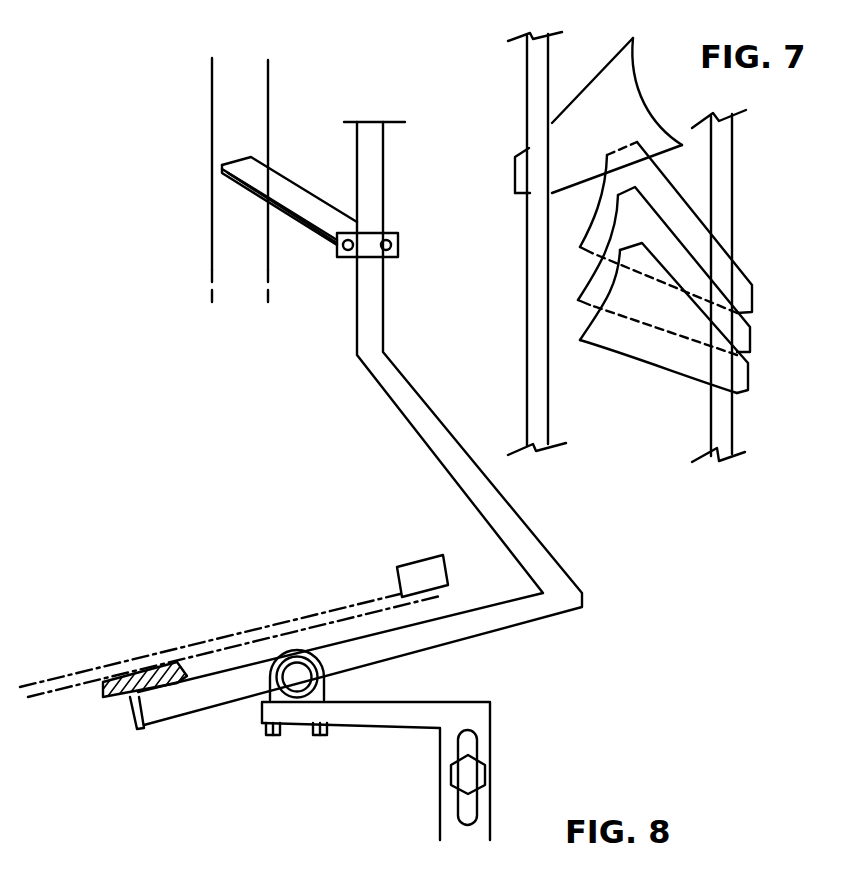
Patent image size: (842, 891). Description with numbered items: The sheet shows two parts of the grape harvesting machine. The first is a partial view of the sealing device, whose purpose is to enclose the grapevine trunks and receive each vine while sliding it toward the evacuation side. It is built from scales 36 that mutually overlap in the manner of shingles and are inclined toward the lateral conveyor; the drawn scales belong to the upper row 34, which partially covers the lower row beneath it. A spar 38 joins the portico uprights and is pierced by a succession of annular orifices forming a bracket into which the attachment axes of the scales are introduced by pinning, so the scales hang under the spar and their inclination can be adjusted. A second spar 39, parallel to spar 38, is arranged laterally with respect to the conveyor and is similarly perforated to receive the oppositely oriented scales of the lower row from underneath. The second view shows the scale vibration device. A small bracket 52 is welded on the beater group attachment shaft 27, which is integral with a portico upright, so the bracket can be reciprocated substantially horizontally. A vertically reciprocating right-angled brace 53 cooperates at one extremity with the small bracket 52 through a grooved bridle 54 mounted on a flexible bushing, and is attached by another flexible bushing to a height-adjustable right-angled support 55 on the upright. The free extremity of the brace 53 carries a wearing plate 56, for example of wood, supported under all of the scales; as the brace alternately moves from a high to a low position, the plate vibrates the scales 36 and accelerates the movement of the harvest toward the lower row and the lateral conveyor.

In FIG. 8, the beater group attachment shaft 27 is at (226, 110).
In FIG. 8, the upper row of scales 34 is at (109, 675).
In FIG. 7, the scale 36 is at (628, 126).
In FIG. 7, the spar 38 is at (733, 210).
In FIG. 7, the spar 39 is at (545, 424).
In FIG. 8, the small bracket 52 is at (270, 176).
In FIG. 8, the right-angled brace 53 is at (375, 313).
In FIG. 8, the grooved bridle 54 is at (375, 233).
In FIG. 8, the right-angled support 55 is at (482, 712).
In FIG. 8, the wearing plate 56 is at (104, 698).